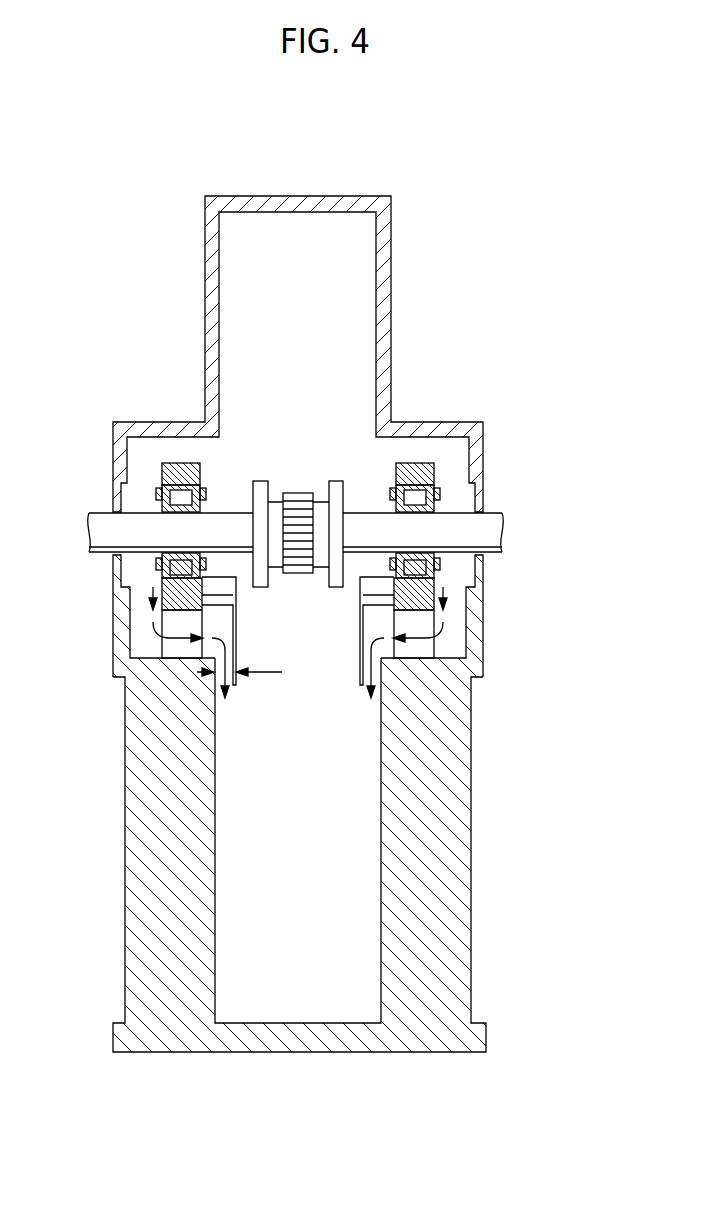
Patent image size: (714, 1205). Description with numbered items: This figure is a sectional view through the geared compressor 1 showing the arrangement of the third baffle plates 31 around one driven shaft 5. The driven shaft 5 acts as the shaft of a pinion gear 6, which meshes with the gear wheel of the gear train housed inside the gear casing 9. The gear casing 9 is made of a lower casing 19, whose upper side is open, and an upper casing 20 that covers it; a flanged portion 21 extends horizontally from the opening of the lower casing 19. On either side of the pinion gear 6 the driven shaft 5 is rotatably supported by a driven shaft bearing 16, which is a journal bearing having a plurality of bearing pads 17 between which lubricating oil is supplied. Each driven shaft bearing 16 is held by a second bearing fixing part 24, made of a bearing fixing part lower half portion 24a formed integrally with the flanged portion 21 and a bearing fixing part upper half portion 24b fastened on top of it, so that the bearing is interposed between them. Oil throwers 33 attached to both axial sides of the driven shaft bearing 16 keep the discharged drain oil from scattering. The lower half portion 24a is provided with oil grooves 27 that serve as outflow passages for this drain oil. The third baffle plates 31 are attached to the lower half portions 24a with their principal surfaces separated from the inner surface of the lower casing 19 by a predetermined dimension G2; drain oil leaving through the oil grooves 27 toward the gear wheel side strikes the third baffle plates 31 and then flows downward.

The geared compressor 1 is at (495, 185).
The driven shaft 5 is at (484, 528).
The pinion gear 6 is at (300, 497).
The gear casing 9 is at (296, 803).
The driven shaft bearing 16 is at (153, 568).
The bearing pad 17 is at (418, 485).
The lower casing 19 is at (440, 848).
The upper casing 20 is at (388, 256).
The flanged portion 21 is at (113, 605).
The second bearing fixing part 24 is at (294, 467).
The bearing fixing part lower half portion 24a is at (417, 597).
The bearing fixing part upper half portion 24b is at (425, 468).
The oil groove 27 is at (142, 623).
The third baffle plate 31 is at (232, 647).
The oil thrower 33 is at (390, 492).
The predetermined dimension G2 is at (240, 660).